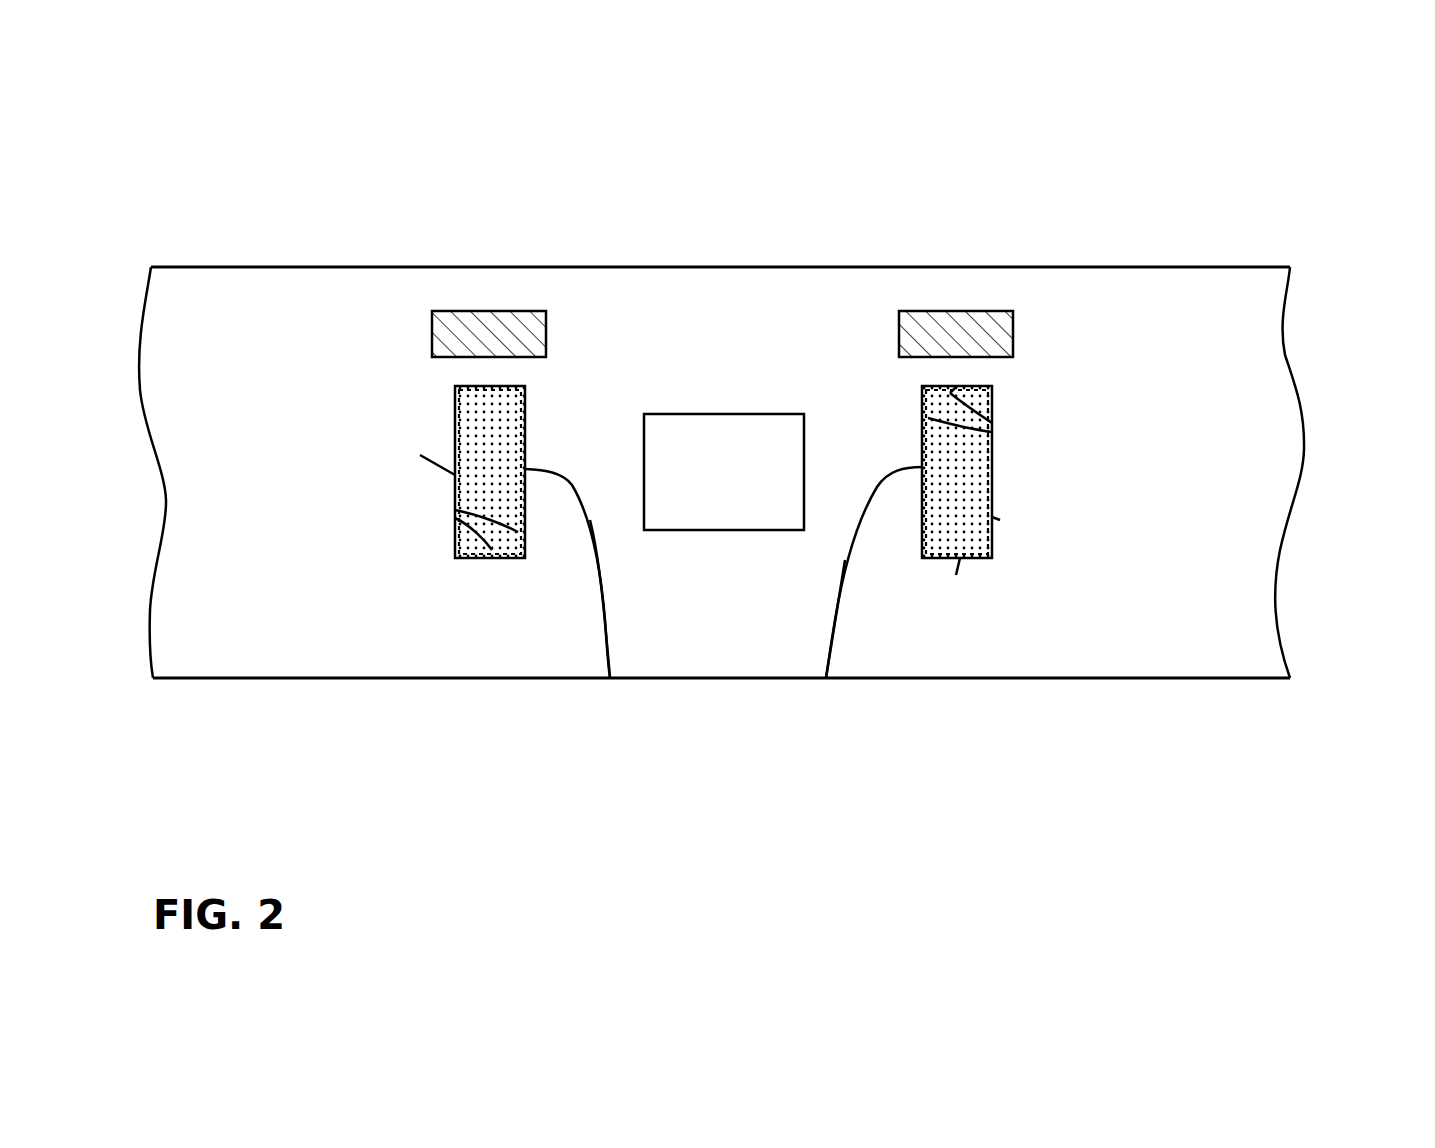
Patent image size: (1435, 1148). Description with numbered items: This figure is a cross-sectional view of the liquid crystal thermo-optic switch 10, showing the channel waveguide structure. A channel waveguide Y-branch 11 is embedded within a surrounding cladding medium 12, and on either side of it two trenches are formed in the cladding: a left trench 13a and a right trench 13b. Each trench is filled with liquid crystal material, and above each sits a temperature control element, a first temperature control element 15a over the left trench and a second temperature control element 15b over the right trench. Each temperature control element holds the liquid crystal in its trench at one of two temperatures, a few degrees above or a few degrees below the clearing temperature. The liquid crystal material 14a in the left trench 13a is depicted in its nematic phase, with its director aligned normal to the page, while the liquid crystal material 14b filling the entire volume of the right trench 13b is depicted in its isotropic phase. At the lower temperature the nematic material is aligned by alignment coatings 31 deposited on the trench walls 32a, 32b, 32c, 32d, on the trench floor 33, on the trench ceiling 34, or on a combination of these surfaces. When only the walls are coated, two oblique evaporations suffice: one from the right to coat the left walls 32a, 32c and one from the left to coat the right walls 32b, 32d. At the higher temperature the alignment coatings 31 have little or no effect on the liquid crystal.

The liquid crystal thermo-optic switch 10 is at (651, 307).
The channel waveguide Y-branch 11 is at (722, 432).
The cladding medium 12 is at (1187, 290).
The left trench 13a is at (457, 558).
The right trench 13b is at (988, 558).
The liquid crystal material in left trench 14a is at (480, 441).
The liquid crystal material in right trench 14b is at (957, 470).
The first temperature control element 15a is at (481, 311).
The second temperature control element 15b is at (960, 311).
The alignment coatings 31 is at (455, 518).
The left trench wall of left trench 32a is at (455, 475).
The right trench wall of left trench 32b is at (610, 678).
The left trench wall of right trench 32c is at (826, 678).
The right trench wall of right trench 32d is at (995, 518).
The trench floor 33 is at (960, 558).
The trench ceiling 34 is at (957, 386).